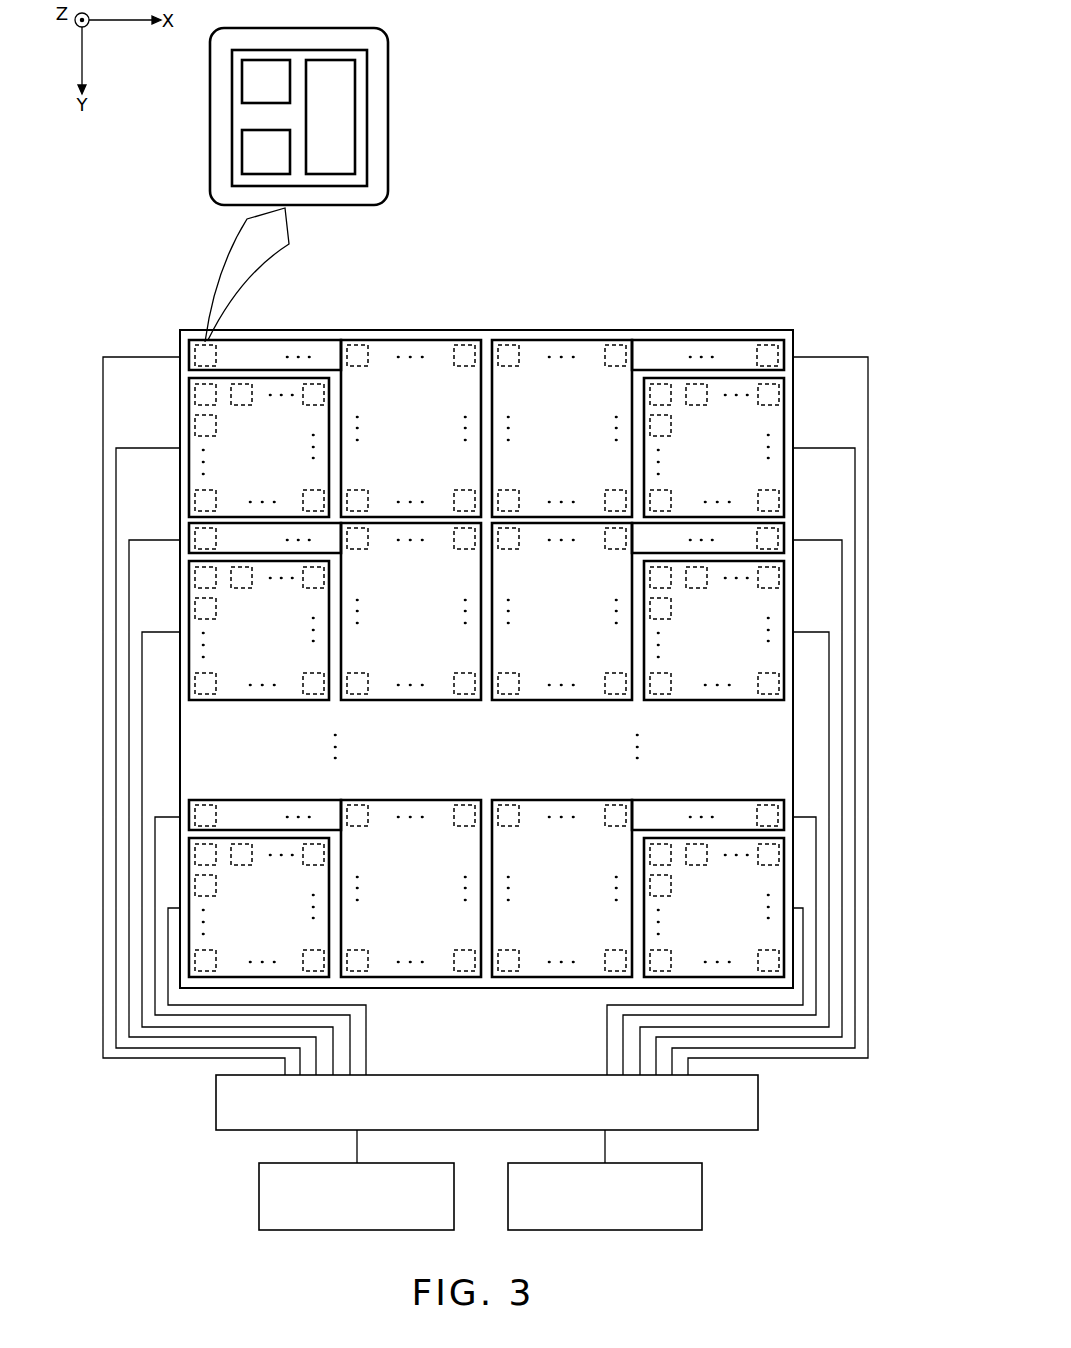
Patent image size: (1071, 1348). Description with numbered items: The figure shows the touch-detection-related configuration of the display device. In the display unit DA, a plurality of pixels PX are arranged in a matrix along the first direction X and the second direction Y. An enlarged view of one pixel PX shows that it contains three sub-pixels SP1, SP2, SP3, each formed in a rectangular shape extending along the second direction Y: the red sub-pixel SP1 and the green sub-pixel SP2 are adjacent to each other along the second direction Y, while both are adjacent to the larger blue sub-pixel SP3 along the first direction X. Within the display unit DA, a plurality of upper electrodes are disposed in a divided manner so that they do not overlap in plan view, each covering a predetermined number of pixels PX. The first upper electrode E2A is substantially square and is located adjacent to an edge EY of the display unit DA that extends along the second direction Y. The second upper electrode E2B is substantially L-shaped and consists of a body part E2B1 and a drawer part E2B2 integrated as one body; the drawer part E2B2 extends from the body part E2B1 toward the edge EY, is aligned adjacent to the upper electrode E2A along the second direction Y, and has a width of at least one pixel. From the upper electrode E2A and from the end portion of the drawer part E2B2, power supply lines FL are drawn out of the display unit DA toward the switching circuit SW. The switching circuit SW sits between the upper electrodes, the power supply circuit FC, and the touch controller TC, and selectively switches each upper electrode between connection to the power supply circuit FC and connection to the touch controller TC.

The pixel PX is at (527, 499).
The sub-pixel SP1 is at (266, 81).
The sub-pixel SP2 is at (266, 152).
The sub-pixel SP3 is at (330, 117).
The display unit DA is at (773, 330).
The upper electrode E2B is at (486, 621).
The body part E2B1 is at (442, 350).
The drawer part E2B2 is at (307, 350).
The upper electrode E2A is at (285, 517).
The power supply line FL is at (142, 732).
The edge EY is at (182, 747).
The switching circuit SW is at (758, 1100).
The power supply circuit FC is at (259, 1195).
The touch controller TC is at (702, 1195).